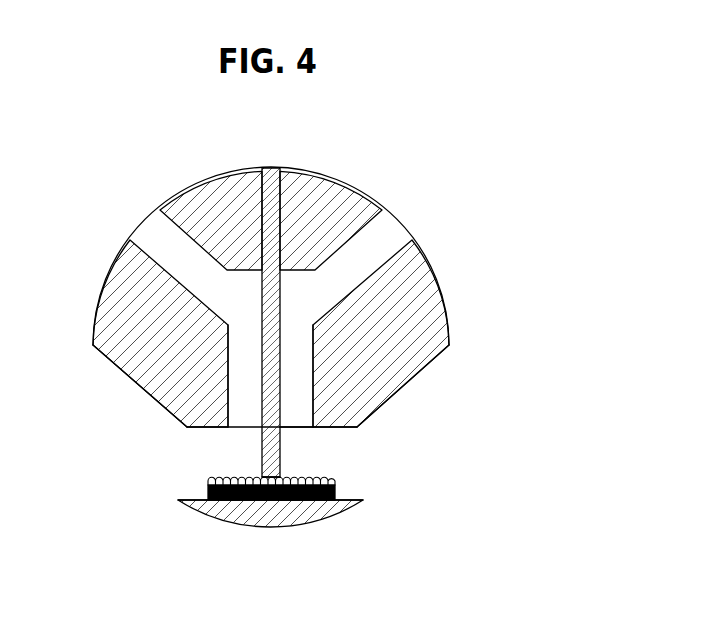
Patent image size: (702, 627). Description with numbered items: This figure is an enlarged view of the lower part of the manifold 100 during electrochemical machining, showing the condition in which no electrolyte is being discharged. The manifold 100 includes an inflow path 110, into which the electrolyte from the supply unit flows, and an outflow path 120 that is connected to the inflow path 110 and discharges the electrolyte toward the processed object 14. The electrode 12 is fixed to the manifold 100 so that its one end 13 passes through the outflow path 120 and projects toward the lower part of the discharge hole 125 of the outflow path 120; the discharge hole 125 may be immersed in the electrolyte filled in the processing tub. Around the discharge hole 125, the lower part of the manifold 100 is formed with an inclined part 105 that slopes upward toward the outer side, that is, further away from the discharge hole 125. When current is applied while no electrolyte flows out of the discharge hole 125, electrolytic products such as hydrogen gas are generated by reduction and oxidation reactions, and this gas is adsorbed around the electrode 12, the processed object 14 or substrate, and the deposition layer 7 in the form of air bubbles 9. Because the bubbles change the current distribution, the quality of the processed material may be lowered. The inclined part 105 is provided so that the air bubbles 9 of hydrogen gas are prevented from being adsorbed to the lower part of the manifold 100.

The manifold 100 is at (400, 307).
The inflow path 110 is at (365, 257).
The electrode 12 is at (272, 352).
The outflow path 120 is at (295, 397).
The inclined part 105 is at (150, 397).
The discharge hole 125 is at (297, 430).
The one end of the electrode 13 is at (265, 475).
The air bubbles 9 is at (333, 482).
The deposition layer 7 is at (265, 500).
The processed object 14 is at (233, 508).